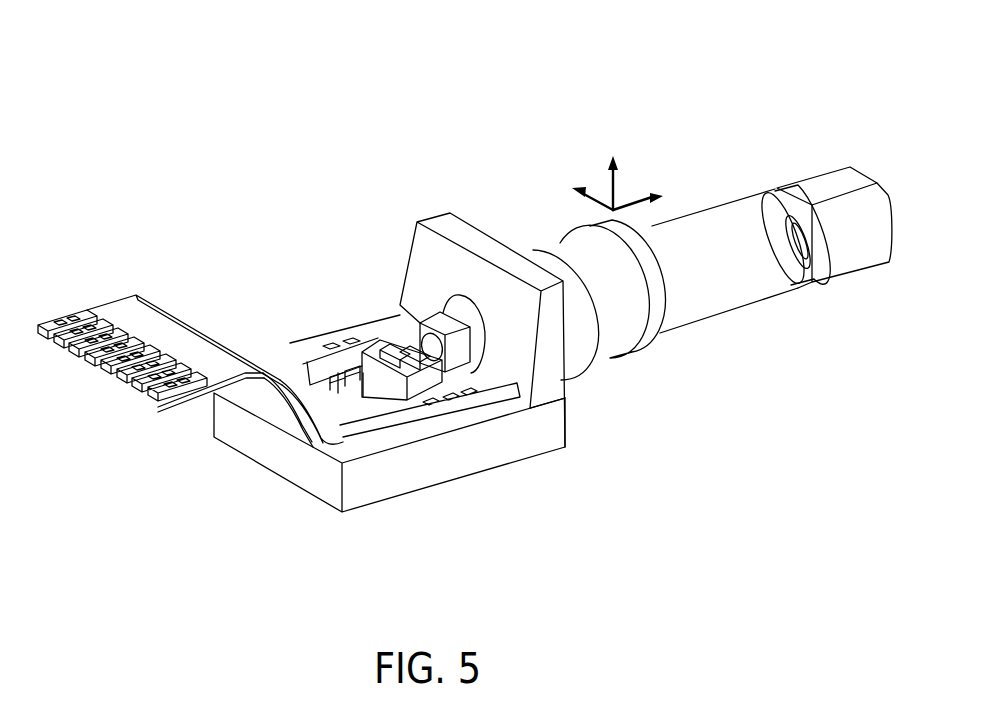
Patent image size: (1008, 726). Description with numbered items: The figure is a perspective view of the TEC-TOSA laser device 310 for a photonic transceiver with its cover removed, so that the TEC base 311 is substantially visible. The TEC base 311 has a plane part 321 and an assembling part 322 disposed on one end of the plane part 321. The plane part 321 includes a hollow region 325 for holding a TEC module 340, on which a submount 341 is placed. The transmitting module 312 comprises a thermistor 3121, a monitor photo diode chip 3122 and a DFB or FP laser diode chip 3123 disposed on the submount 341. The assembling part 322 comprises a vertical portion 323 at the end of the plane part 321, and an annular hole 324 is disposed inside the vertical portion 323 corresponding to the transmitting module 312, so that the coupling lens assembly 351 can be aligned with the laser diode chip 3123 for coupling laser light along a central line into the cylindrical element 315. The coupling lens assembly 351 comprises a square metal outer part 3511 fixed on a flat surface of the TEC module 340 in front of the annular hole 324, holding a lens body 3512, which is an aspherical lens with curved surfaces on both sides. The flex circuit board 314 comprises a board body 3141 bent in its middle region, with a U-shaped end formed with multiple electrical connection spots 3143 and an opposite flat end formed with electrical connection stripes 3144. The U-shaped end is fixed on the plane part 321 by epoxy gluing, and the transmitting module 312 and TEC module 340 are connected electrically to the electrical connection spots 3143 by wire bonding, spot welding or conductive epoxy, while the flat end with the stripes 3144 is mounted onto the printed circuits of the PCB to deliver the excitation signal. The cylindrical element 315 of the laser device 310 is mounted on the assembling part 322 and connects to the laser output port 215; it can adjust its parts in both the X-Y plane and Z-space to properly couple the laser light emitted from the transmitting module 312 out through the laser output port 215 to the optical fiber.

The laser device 310 is at (357, 70).
The TEC base 311 is at (674, 492).
The transmitting module 312 is at (318, 228).
The thermistor 3121 is at (385, 352).
The monitor photo diode chip 3122 is at (395, 353).
The laser diode chip 3123 is at (418, 350).
The flex circuit board 314 is at (273, 530).
The board body 3141 is at (287, 402).
The electrical connection spots 3143 is at (368, 397).
The electrical connection stripes 3144 is at (141, 384).
The cylindrical element 315 is at (702, 227).
The laser output port 215 is at (818, 192).
The plane part 321 is at (388, 482).
The assembling part 322 is at (648, 443).
The vertical portion 323 is at (547, 357).
The annular hole 324 is at (480, 357).
The hollow region 325 is at (373, 398).
The TEC module 340 is at (372, 392).
The submount 341 is at (430, 370).
The coupling lens assembly 351 is at (422, 155).
The square metal outer part 3511 is at (440, 316).
The lens body 3512 is at (428, 350).